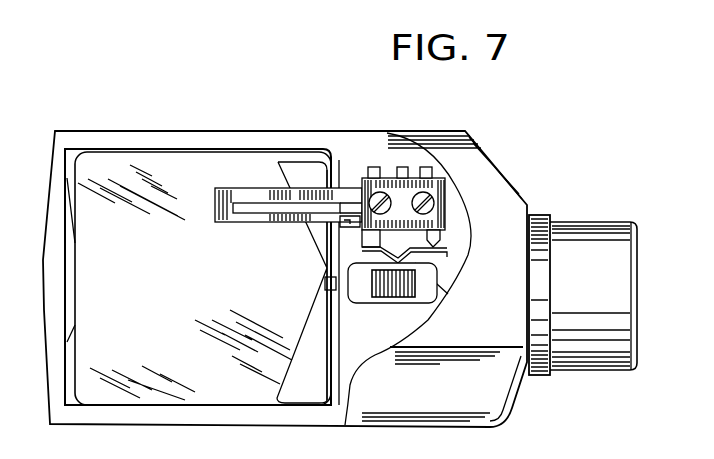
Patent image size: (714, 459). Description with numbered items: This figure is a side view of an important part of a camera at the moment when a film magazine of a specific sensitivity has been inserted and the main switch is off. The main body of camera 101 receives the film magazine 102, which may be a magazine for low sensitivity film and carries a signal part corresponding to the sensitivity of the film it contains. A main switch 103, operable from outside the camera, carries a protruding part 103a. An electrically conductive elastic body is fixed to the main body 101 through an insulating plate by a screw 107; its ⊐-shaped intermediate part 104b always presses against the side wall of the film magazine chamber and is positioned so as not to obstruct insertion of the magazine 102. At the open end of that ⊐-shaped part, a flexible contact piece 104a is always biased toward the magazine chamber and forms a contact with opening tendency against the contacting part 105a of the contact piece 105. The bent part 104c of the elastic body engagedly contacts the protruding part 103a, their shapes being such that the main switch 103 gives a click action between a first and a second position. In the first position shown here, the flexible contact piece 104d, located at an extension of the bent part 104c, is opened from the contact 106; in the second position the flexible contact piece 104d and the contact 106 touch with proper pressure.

The main body of camera 101 is at (518, 250).
The film magazine 102 is at (122, 170).
The main switch 103 is at (389, 268).
The protruding part 103a is at (343, 266).
The flexible contact piece 104a is at (303, 223).
The ⊐-shaped intermediate part 104b is at (275, 199).
The bent part 104c is at (426, 321).
The flexible contact piece 104d is at (444, 282).
The contact piece 105 is at (421, 199).
The contacting part 105a is at (346, 187).
The contact 106 is at (443, 240).
The screw 107 is at (384, 199).